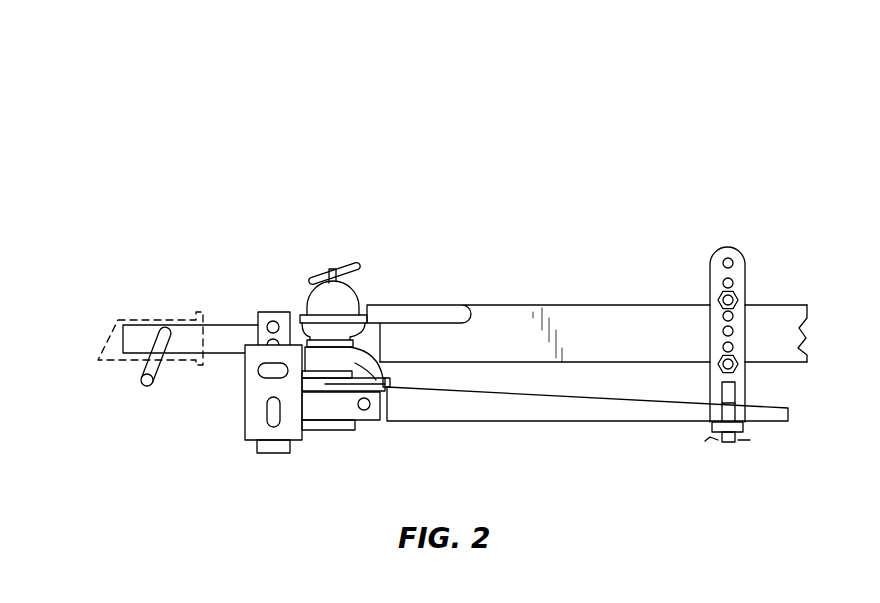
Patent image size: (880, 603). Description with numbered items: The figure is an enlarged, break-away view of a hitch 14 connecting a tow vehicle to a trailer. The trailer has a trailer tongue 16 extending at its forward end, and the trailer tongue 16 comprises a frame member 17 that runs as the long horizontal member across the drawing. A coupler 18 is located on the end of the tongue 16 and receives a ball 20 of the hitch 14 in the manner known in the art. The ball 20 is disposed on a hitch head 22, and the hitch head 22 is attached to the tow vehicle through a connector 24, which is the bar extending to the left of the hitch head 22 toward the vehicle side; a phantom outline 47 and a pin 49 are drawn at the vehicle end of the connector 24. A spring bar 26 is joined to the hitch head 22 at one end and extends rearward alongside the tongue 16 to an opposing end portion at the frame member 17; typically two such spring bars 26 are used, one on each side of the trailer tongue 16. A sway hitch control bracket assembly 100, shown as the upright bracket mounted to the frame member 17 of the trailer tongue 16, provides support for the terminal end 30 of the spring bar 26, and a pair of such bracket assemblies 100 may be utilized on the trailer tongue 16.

The hitch 14 is at (562, 145).
The trailer tongue 16 is at (778, 307).
The frame member 17 is at (777, 337).
The coupler 18 is at (332, 270).
The ball 20 is at (337, 333).
The hitch head 22 is at (380, 388).
The connector 24 is at (228, 333).
The spring bar 26 is at (628, 421).
The terminal end 30 is at (752, 415).
The vehicle receiver (phantom) 47 is at (100, 362).
The hitch pin 49 is at (150, 388).
The sway hitch control bracket assembly 100 is at (740, 263).